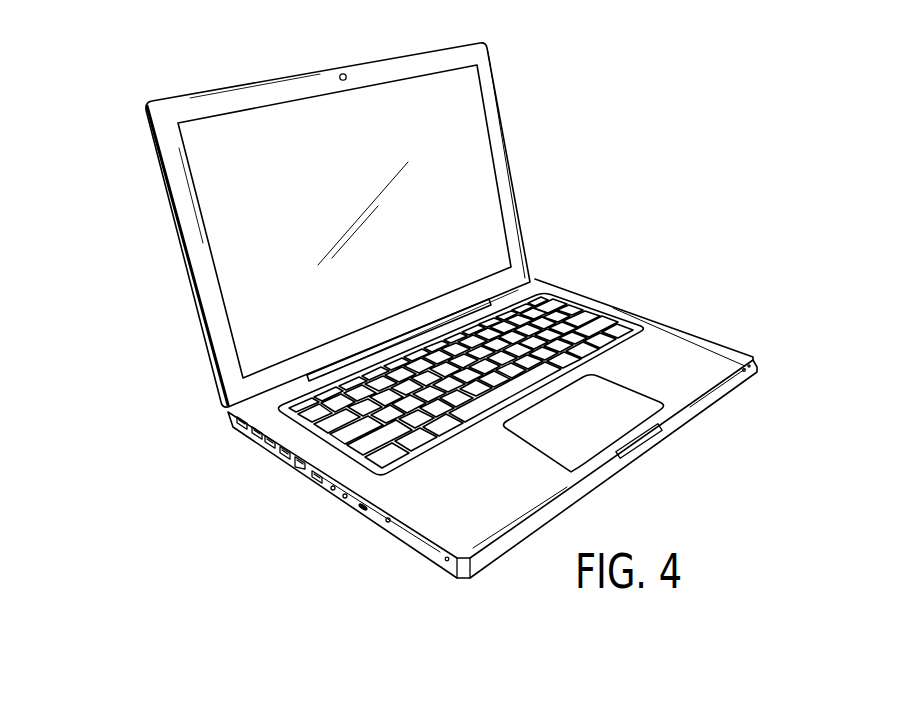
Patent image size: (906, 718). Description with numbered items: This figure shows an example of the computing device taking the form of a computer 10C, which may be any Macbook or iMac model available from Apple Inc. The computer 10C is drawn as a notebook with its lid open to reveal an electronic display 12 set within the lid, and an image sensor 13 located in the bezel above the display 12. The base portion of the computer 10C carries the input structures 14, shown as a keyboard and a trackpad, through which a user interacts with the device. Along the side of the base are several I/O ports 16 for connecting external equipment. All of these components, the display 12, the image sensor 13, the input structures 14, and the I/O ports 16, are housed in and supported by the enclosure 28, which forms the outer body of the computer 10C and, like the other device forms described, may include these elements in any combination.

The computer 10C is at (158, 241).
The electronic display 12 is at (470, 172).
The image sensor 13 is at (340, 77).
The input structures 14 is at (582, 318).
The I/O ports 16 is at (257, 440).
The enclosure 28 is at (648, 319).